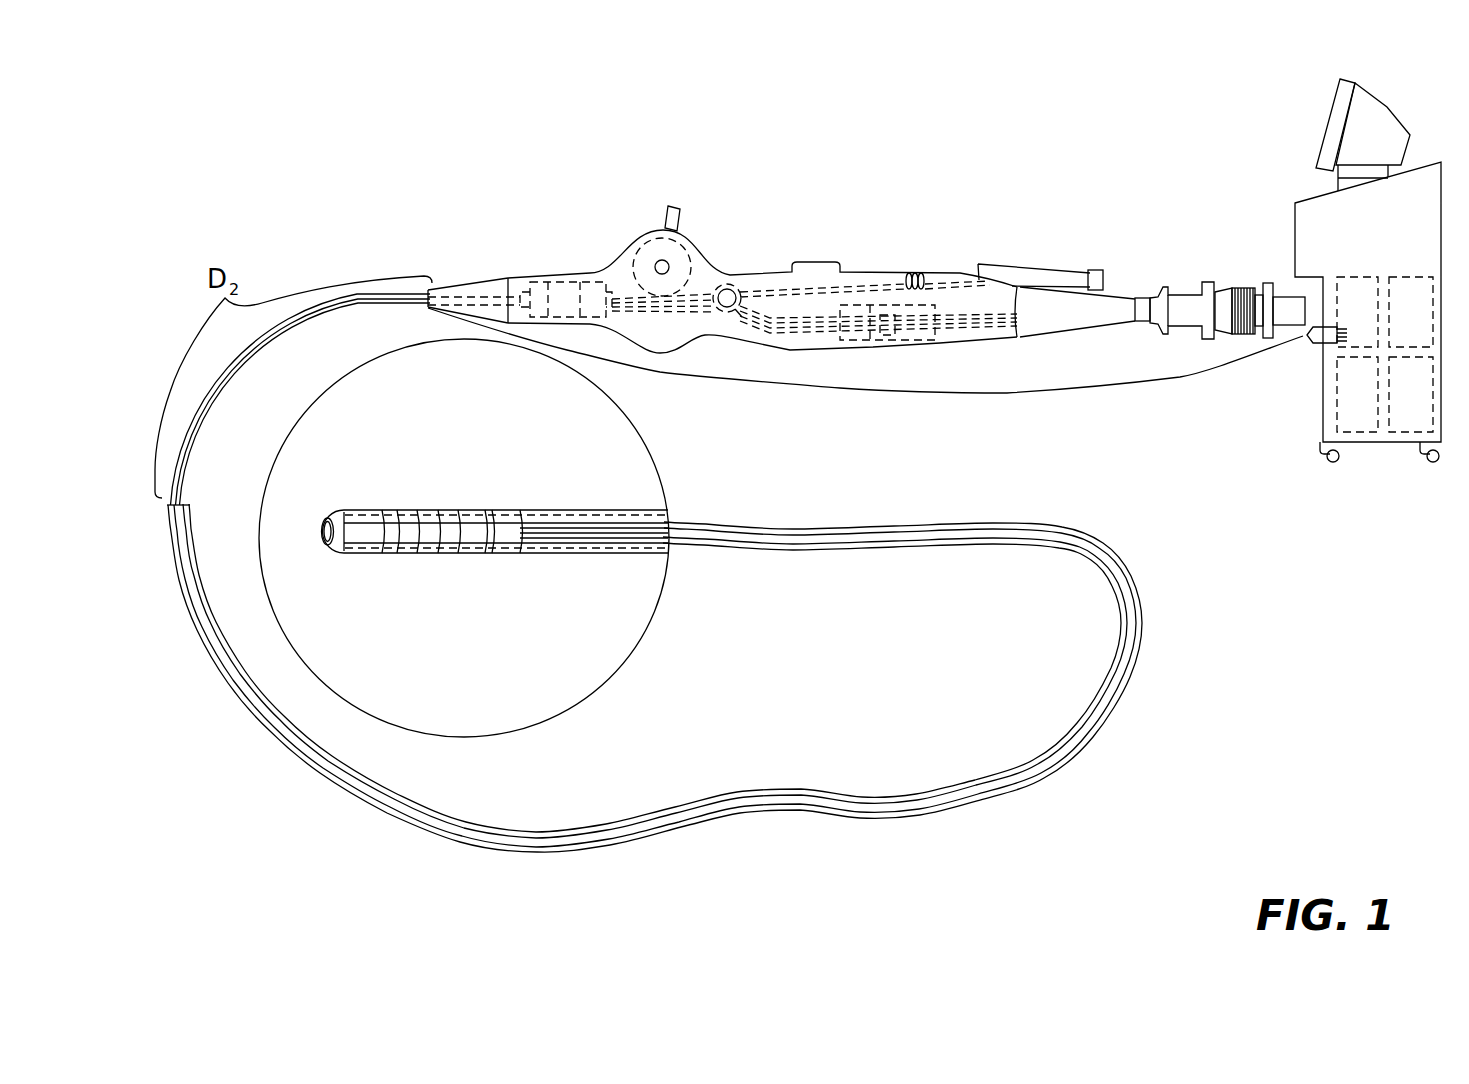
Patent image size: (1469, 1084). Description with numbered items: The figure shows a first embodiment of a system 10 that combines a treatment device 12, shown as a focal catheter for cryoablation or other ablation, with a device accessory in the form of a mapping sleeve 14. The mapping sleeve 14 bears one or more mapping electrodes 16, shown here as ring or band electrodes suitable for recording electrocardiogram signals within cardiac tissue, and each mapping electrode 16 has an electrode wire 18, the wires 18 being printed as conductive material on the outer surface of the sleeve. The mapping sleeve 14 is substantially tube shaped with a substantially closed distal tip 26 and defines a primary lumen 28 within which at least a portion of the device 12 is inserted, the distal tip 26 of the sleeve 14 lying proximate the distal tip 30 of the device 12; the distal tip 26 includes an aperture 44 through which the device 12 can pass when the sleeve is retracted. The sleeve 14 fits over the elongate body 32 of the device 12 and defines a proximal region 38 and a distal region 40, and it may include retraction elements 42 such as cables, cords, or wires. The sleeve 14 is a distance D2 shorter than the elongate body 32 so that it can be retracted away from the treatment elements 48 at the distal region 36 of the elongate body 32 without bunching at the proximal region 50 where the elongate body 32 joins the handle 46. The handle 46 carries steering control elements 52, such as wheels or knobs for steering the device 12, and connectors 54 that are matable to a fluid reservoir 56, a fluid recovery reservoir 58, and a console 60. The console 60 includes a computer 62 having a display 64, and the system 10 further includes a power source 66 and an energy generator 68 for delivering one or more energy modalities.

The system 10 is at (1358, 63).
The treatment device 12 is at (362, 261).
The mapping sleeve 14 is at (1055, 527).
The mapping electrodes 16 is at (503, 550).
The electrode wires 18 is at (592, 543).
The distal tip of the mapping sleeve 26 is at (329, 522).
The primary lumen 28 is at (528, 513).
The distal tip of the device 30 is at (350, 516).
The elongate body 32 is at (911, 547).
The distal region of the device 36 is at (567, 550).
The proximal region of the mapping sleeve 38 is at (203, 632).
The distal region of the mapping sleeve 40 is at (343, 554).
The retraction elements 42 is at (203, 408).
The aperture 44 is at (325, 540).
The handle 46 is at (950, 275).
The treatment elements 48 is at (368, 540).
The proximal region of the elongate body 50 is at (399, 293).
The steering control elements 52 is at (679, 211).
The connectors 54 is at (1177, 292).
The fluid reservoir 56 is at (1381, 413).
The fluid recovery reservoir 58 is at (1431, 413).
The console 60 is at (1436, 211).
The computer 62 is at (1390, 151).
The display 64 is at (1327, 128).
The power source 66 is at (1431, 316).
The energy generator 68 is at (1381, 316).